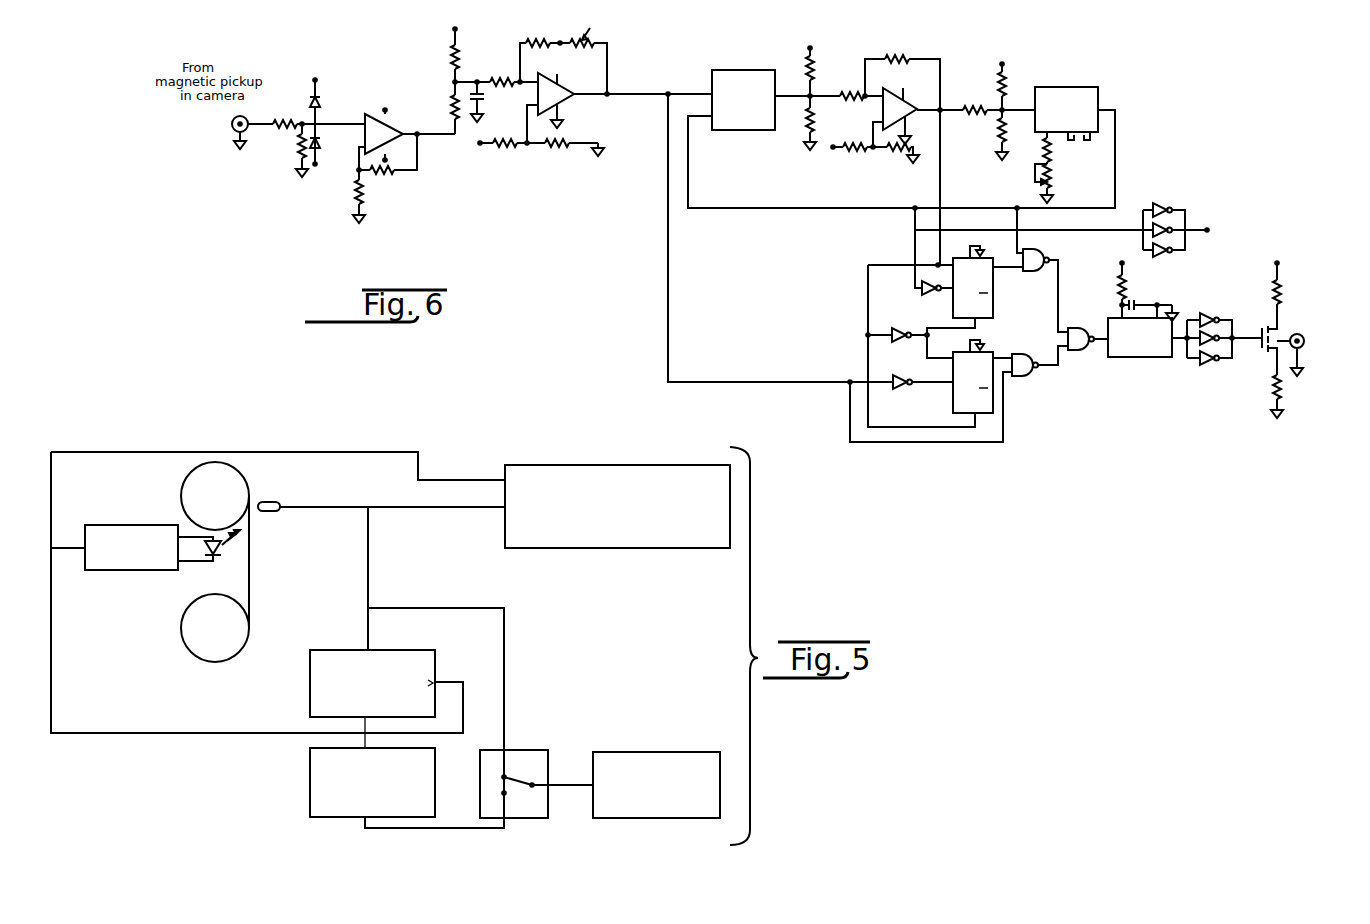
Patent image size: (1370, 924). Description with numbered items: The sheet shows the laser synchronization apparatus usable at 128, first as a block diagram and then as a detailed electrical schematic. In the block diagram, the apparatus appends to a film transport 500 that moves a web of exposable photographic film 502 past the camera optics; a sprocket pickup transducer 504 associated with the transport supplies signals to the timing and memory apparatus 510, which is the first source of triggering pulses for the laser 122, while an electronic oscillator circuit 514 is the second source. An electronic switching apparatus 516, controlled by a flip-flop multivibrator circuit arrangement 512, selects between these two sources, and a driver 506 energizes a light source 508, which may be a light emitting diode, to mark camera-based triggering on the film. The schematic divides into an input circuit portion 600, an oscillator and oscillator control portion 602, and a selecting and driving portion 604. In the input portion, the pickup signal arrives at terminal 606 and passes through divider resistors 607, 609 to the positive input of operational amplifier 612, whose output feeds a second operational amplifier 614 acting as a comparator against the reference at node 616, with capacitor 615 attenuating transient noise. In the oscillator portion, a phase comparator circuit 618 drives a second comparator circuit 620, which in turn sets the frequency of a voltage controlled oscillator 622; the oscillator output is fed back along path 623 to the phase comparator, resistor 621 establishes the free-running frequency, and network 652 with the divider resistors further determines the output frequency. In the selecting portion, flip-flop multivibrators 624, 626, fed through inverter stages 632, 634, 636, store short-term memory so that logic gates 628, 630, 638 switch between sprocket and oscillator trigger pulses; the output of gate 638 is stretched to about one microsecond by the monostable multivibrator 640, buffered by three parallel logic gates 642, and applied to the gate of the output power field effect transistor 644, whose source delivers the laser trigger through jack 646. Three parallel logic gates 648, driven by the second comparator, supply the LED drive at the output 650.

In FIG. 6, the synchronization apparatus 128 is at (675, 28).
In FIG. 5, the synchronization apparatus 128 is at (332, 424).
In FIG. 6, the input circuit portion 600 is at (383, 40).
In FIG. 6, the oscillator and oscillator control portion 602 is at (914, 28).
In FIG. 6, the selecting and driving portion 604 is at (1160, 422).
In FIG. 6, the terminal 606 is at (229, 133).
In FIG. 6, the divider resistor 607 is at (290, 128).
In FIG. 6, the divider resistor 609 is at (300, 157).
In FIG. 6, the operational amplifier 612 is at (396, 131).
In FIG. 6, the second operational amplifier 614 is at (576, 97).
In FIG. 6, the capacitor 615 is at (466, 80).
In FIG. 6, the node 616 is at (527, 148).
In FIG. 6, the phase comparator circuit 618 is at (752, 70).
In FIG. 6, the second comparator circuit 620 is at (920, 106).
In FIG. 6, the resistor 621 is at (975, 118).
In FIG. 6, the voltage controlled oscillator 622 is at (1068, 87).
In FIG. 6, the path 623 is at (797, 198).
In FIG. 6, the flip-flop multivibrator 624 is at (995, 301).
In FIG. 6, the flip-flop multivibrator 626 is at (995, 404).
In FIG. 6, the logic gate 628 is at (1025, 250).
In FIG. 6, the logic gate 630 is at (1020, 375).
In FIG. 6, the inverter stage 632 is at (913, 288).
In FIG. 6, the inverter stage 634 is at (885, 334).
In FIG. 6, the inverter stage 636 is at (890, 380).
In FIG. 6, the logic gate 638 is at (1082, 326).
In FIG. 6, the monostable multivibrator 640 is at (1165, 358).
In FIG. 6, the logic gates 642 is at (1217, 303).
In FIG. 6, the output power field effect transistor 644 is at (1262, 326).
In FIG. 6, the jack 646 is at (1308, 356).
In FIG. 6, the logic gates 648 is at (1180, 179).
In FIG. 6, the output to LED driver 650 is at (1207, 230).
In FIG. 6, the network 652 is at (1088, 162).
In FIG. 5, the film transport 500 is at (232, 640).
In FIG. 5, the exposable photographic film 502 is at (251, 600).
In FIG. 5, the sprocket pickup transducer 504 is at (280, 512).
In FIG. 5, the driver 506 is at (97, 570).
In FIG. 5, the light source 508 is at (212, 550).
In FIG. 5, the timing and memory apparatus 510 is at (606, 548).
In FIG. 5, the flip-flop multivibrator circuit arrangement 512 is at (397, 650).
In FIG. 5, the electronic oscillator circuit 514 is at (310, 780).
In FIG. 5, the electronic switching apparatus 516 is at (520, 750).
In FIG. 5, the laser 122 is at (655, 752).